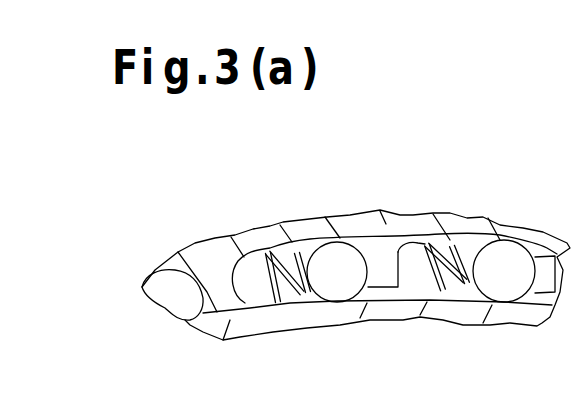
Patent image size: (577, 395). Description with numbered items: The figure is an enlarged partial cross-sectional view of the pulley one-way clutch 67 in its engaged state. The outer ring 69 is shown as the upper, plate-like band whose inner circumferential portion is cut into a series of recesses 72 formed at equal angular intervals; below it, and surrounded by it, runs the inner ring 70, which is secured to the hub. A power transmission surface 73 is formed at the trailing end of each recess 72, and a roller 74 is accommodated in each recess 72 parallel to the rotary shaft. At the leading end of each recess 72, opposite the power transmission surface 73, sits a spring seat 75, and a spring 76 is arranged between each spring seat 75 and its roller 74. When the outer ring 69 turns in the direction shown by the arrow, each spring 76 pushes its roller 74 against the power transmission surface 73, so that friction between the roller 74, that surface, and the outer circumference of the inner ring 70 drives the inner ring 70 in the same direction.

The belt / chain segment assembly 67 is at (422, 220).
The outer ring 69 is at (403, 191).
The inner ring 70 is at (377, 316).
The recess 72 is at (264, 251).
The power transmission surface 73 is at (177, 280).
The roller 74 is at (175, 303).
The spring seat 75 is at (245, 312).
The spring 76 is at (292, 306).